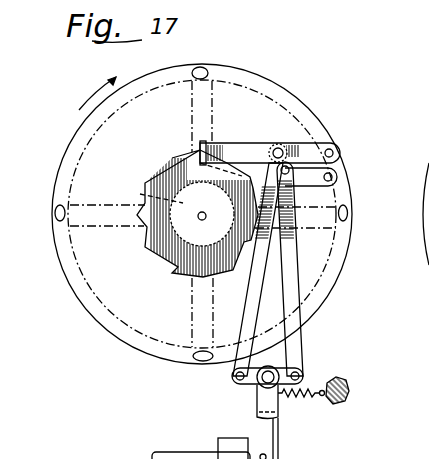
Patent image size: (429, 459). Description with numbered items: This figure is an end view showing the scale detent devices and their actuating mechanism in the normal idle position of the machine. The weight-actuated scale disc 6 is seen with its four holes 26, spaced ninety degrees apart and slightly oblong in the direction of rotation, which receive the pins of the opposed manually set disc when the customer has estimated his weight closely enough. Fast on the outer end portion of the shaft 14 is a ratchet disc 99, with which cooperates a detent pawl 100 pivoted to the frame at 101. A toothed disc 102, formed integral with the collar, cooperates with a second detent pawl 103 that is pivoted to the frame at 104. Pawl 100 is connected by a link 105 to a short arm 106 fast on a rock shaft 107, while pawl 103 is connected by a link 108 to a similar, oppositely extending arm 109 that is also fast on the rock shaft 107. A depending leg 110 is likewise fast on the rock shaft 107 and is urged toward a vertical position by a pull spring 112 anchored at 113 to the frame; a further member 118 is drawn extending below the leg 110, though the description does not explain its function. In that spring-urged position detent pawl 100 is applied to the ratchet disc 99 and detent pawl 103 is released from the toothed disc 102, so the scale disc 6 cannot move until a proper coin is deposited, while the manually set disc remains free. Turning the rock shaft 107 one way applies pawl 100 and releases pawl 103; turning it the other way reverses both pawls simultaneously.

The disc 6 is at (311, 108).
The shaft 14 is at (200, 214).
The holes 26 is at (203, 67).
The ratchet disc 99 is at (166, 181).
The detent pawl 100 is at (259, 140).
The pivot 101 is at (336, 153).
The toothed disc 102 is at (141, 194).
The detent pawl 103 is at (302, 186).
The pivot 104 is at (336, 177).
The link 105 is at (253, 290).
The short arm 106 is at (246, 384).
The rock shaft 107 is at (288, 367).
The link 108 is at (293, 288).
The arm 109 is at (300, 384).
The depending leg 110 is at (280, 405).
The pull spring 112 is at (305, 402).
The anchor 113 is at (341, 399).
The rod 118 is at (280, 442).